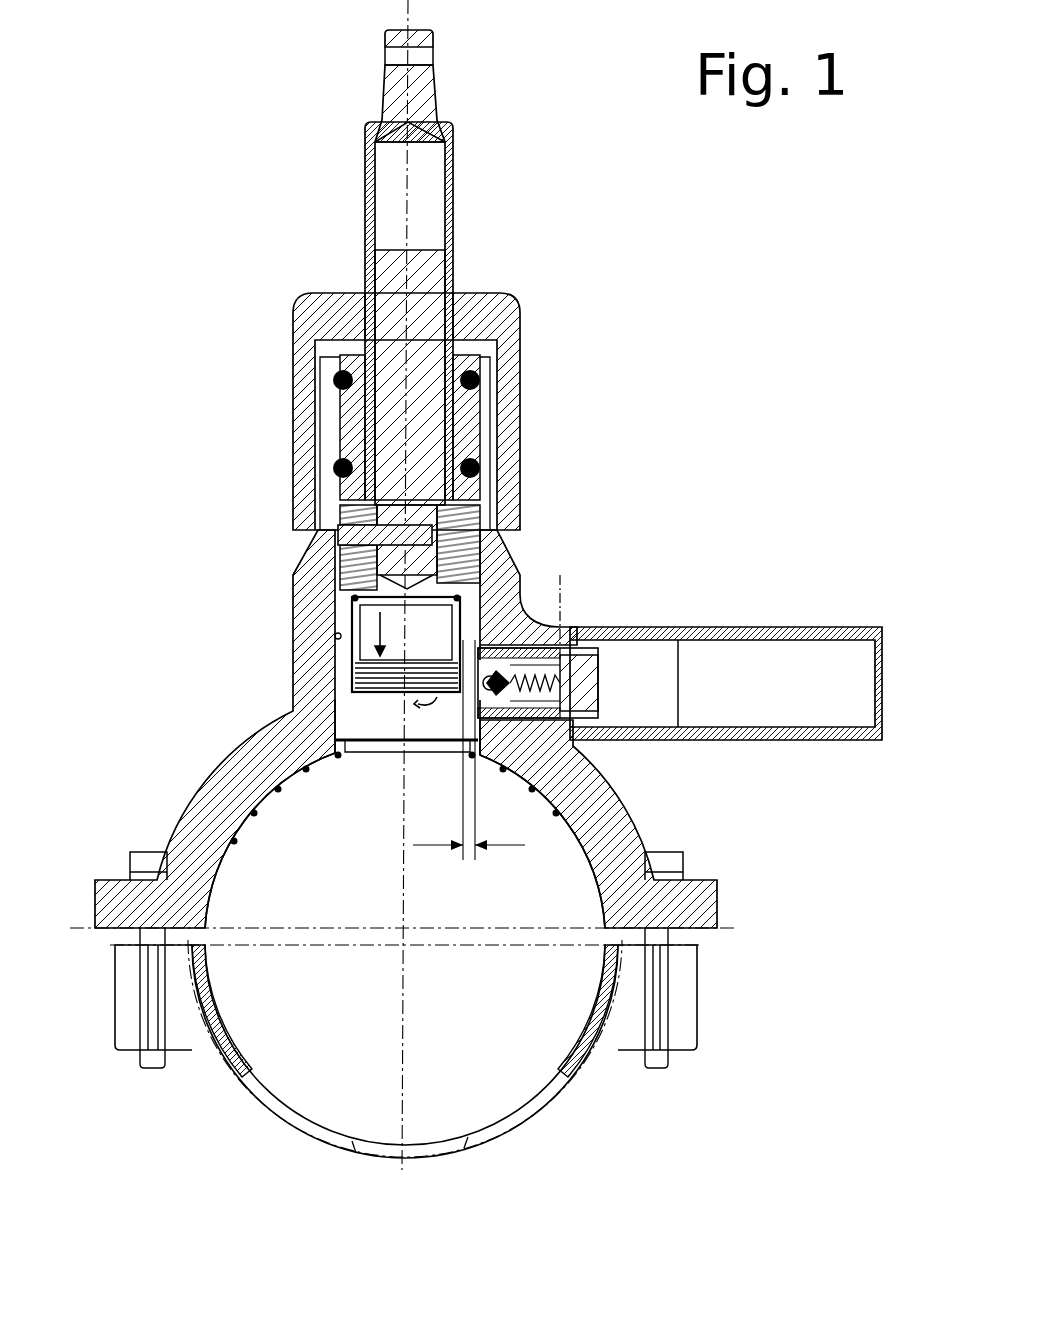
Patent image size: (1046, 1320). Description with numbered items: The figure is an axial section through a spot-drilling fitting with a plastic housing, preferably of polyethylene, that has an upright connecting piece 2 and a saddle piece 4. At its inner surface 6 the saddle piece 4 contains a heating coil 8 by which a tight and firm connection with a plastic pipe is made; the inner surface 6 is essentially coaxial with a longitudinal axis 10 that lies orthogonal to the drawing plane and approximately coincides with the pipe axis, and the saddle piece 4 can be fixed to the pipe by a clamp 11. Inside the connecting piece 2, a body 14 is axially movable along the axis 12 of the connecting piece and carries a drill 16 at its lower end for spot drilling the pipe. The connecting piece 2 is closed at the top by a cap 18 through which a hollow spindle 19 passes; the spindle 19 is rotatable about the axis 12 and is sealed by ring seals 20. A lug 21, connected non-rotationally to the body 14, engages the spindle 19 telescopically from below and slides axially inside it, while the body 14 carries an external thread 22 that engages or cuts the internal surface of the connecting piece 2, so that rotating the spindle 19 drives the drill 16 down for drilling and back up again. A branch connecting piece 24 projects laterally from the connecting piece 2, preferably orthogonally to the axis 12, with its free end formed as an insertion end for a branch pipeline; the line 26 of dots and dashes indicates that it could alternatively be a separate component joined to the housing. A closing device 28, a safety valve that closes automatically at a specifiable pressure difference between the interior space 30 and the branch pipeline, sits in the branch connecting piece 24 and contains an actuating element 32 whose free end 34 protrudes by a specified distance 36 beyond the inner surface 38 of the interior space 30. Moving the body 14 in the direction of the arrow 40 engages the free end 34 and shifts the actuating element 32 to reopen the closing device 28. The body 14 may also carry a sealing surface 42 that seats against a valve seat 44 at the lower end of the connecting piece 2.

The connecting piece 2 is at (320, 567).
The saddle piece 4 is at (147, 848).
The inner surface 6 is at (247, 840).
The heating coil 8 is at (272, 797).
The longitudinal axis 10 is at (400, 943).
The clamp 11 is at (238, 1068).
The axis of the connecting piece 12 is at (403, 1041).
The body 14 is at (355, 548).
The drill 16 is at (355, 667).
The cap 18 is at (310, 362).
The spindle 19 is at (370, 182).
The ring seals 20 is at (478, 378).
The lug 21 is at (420, 430).
The external thread 22 is at (478, 530).
The branch connecting piece 24 is at (820, 630).
The line of dots and dashes 26 is at (560, 588).
The closing device 28 is at (563, 667).
The interior space 30 is at (383, 718).
The actuating element 32 is at (593, 737).
The free end 34 is at (477, 655).
The specified distance 36 is at (469, 866).
The inner surface 38 is at (335, 636).
The arrow 40 is at (360, 620).
The sealing surface 42 is at (465, 655).
The valve seat 44 is at (340, 720).